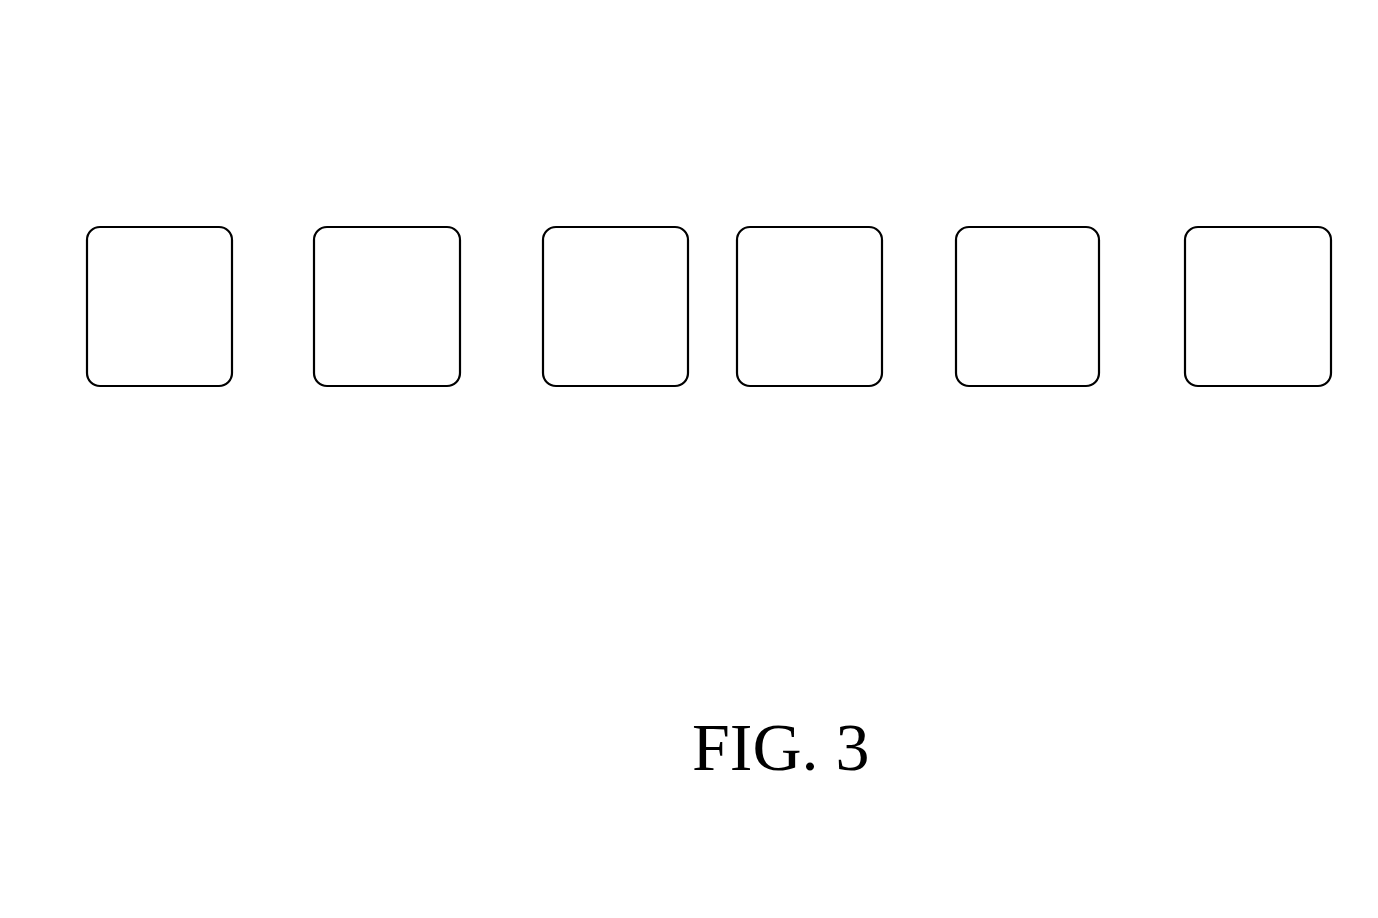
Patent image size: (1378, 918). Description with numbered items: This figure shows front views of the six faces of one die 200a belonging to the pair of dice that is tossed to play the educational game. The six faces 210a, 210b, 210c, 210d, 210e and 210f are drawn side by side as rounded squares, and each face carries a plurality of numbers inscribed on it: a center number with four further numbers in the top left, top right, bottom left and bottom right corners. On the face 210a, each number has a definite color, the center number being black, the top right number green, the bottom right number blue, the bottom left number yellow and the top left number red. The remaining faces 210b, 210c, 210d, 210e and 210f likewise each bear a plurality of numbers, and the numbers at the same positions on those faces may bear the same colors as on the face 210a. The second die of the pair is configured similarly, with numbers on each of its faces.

The die 200a is at (745, 131).
The face 210a is at (158, 386).
The face 210b is at (385, 386).
The face 210c is at (613, 386).
The face 210d is at (807, 386).
The face 210e is at (1025, 386).
The face 210f is at (1256, 386).